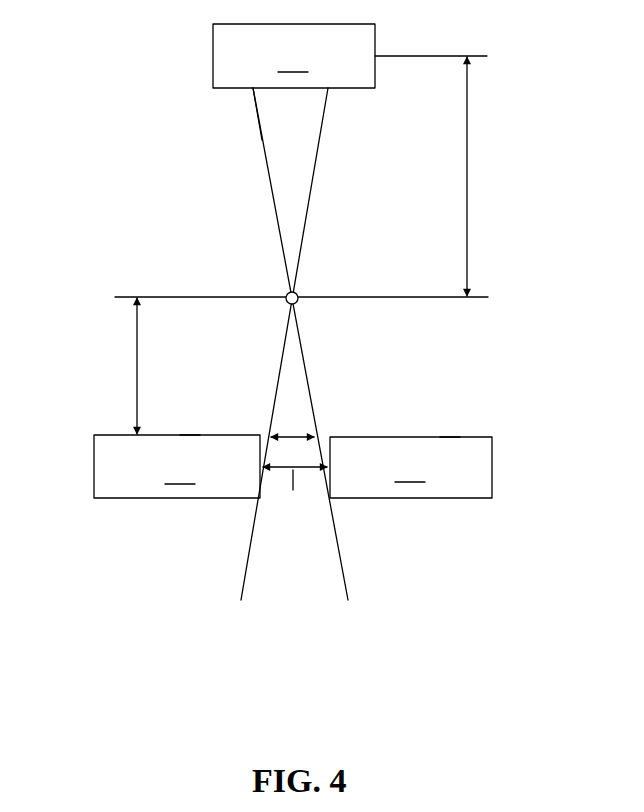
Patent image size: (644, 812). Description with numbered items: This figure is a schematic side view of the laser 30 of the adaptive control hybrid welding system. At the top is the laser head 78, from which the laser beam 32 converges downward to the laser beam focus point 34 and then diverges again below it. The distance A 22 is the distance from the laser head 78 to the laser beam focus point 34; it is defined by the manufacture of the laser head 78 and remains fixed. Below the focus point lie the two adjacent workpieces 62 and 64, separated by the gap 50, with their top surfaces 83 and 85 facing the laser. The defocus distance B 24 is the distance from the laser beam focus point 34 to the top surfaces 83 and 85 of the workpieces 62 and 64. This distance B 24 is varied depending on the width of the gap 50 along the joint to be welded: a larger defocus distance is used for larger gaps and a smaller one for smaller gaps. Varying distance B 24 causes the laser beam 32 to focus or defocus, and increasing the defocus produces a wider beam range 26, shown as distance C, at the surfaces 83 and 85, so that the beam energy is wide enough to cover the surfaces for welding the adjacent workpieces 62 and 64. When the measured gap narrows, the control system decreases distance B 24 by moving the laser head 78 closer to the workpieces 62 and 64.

The laser 30 is at (294, 56).
The laser head 78 is at (230, 88).
The distance A 22 is at (467, 177).
The laser beam focus point 34 is at (298, 294).
The distance B 24 is at (137, 369).
The laser beam 32 is at (300, 345).
The beam range 26 is at (293, 437).
The top surface of workpiece 85 is at (180, 435).
The top surface of workpiece 83 is at (440, 437).
The workpiece 64 is at (177, 466).
The workpiece 62 is at (411, 467).
The gap 50 is at (293, 470).